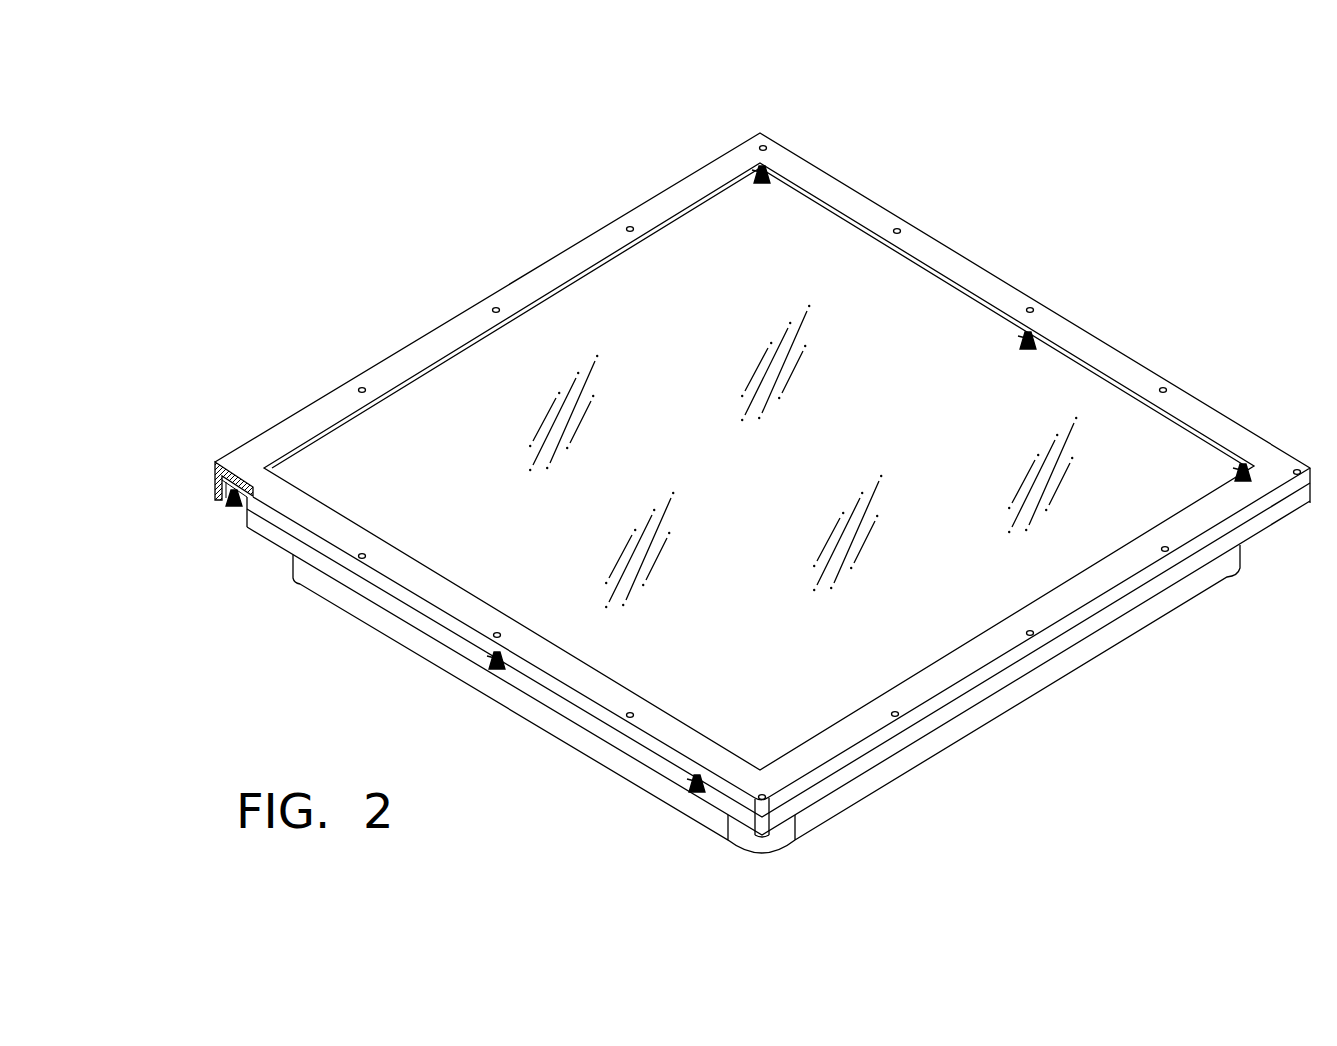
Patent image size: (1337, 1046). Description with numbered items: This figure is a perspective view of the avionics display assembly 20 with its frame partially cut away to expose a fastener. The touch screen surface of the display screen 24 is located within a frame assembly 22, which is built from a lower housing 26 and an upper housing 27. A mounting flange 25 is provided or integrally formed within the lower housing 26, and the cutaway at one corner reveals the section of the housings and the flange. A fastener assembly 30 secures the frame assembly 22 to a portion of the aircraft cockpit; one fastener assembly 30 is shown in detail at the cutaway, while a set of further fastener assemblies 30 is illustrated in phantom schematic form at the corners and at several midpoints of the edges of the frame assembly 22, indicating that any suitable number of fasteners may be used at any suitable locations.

The avionics display assembly 20 is at (728, 455).
The frame assembly 22 is at (795, 182).
The display screen 24 is at (815, 290).
The mounting flange 25 is at (229, 500).
The lower housing 26 is at (218, 480).
The upper housing 27 is at (290, 440).
The fastener assembly 30 is at (228, 543).